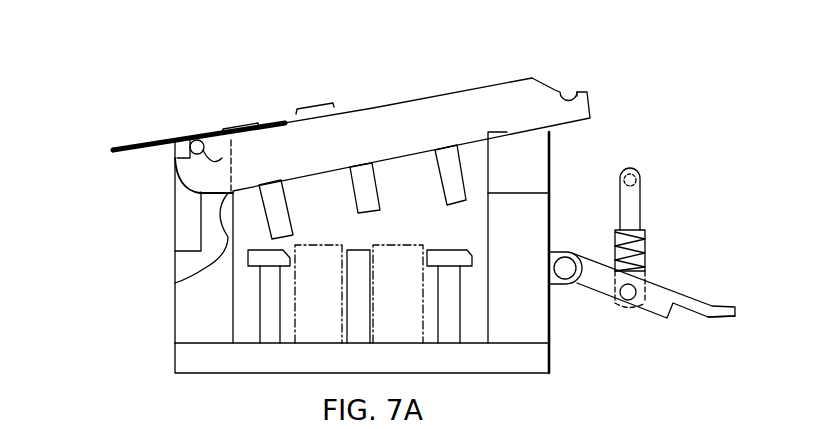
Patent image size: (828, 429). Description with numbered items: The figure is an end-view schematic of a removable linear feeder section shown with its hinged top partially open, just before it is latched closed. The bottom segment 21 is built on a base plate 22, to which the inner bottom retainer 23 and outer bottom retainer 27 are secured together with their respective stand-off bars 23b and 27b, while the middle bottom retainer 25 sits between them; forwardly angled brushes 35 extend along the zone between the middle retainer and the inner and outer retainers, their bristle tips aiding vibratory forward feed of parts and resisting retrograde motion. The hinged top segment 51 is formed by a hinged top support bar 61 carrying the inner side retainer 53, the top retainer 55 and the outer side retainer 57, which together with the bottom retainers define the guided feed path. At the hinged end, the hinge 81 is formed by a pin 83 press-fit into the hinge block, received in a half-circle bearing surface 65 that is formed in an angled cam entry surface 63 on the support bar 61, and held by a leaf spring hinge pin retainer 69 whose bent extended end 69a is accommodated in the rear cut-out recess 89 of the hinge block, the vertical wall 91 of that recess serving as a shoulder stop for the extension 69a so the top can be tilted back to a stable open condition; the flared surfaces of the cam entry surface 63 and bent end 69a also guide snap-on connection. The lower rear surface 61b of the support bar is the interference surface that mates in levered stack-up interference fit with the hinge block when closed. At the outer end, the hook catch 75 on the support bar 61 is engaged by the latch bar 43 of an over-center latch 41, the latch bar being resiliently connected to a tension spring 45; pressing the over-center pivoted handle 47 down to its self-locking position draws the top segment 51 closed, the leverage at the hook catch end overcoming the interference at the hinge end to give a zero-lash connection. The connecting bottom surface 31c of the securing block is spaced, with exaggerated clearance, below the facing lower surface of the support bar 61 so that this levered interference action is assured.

The bottom segment 21 is at (553, 361).
The base plate 22 is at (503, 365).
The inner bottom retainer 23 is at (292, 258).
The stand-off bar 23b is at (270, 314).
The middle bottom retainer 25 is at (364, 273).
The outer bottom retainer 27 is at (440, 226).
The stand-off bar 27b is at (452, 315).
The connecting bottom surface 31c is at (532, 193).
The brushes 35 is at (317, 330).
The over-center latch 41 is at (675, 287).
The latch bar 43 is at (640, 173).
The tension spring 45 is at (641, 212).
The over-center pivoted handle 47 is at (692, 312).
The hinged top segment 51 is at (507, 80).
The inner side retainer 53 is at (281, 197).
The top retainer 55 is at (372, 183).
The outer side retainer 57 is at (458, 165).
The hinged top support bar 61 is at (373, 108).
The lower rear surface 61b is at (187, 280).
The cam entry surface 63 is at (172, 158).
The half-circle bearing surface 65 is at (222, 158).
The leaf spring hinge pin retainer 69 is at (168, 153).
The extended end 69a is at (124, 147).
The hook catch 75 is at (587, 93).
The hinge 81 is at (218, 125).
The pin 83 is at (192, 143).
The rear cut-out recess 89 is at (180, 200).
The vertical wall 91 is at (201, 228).